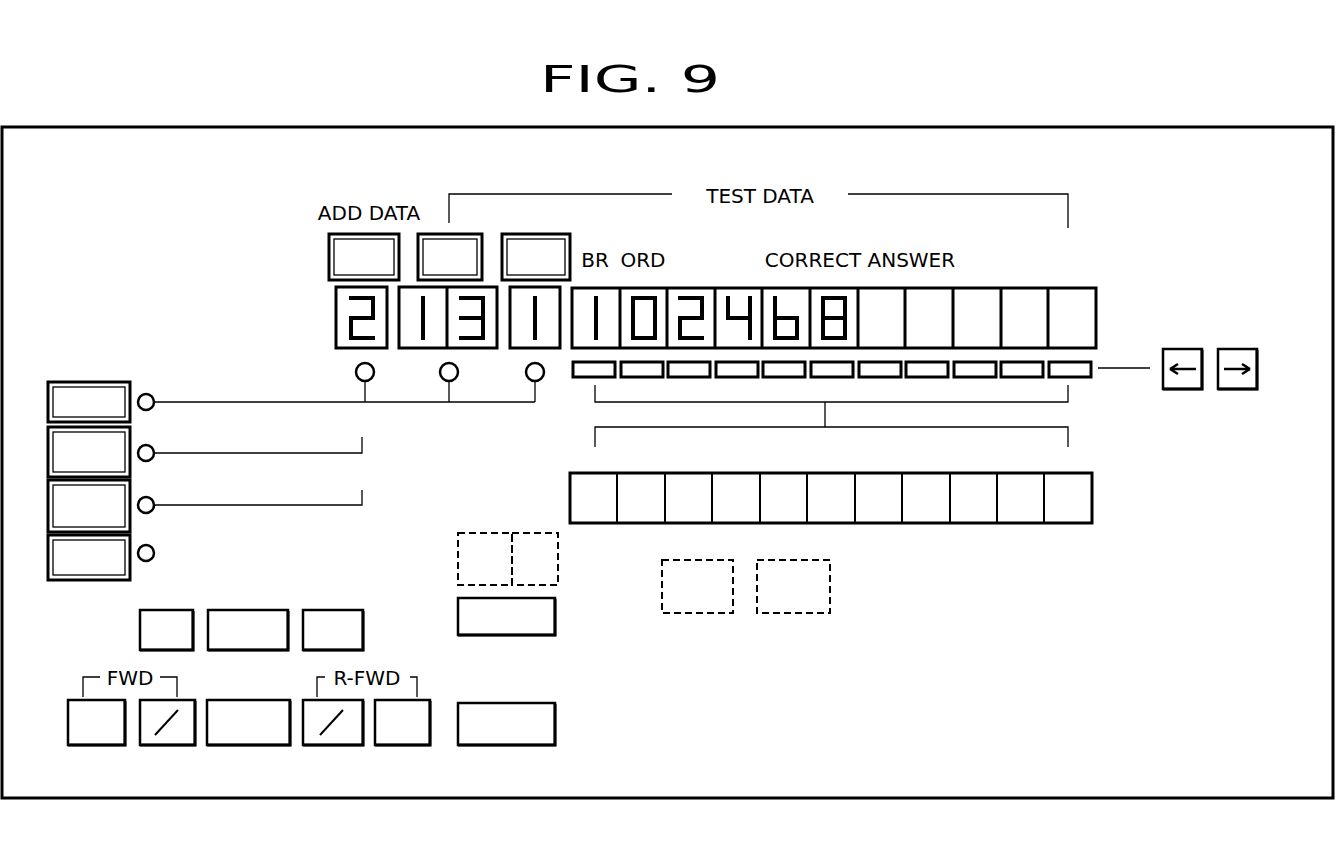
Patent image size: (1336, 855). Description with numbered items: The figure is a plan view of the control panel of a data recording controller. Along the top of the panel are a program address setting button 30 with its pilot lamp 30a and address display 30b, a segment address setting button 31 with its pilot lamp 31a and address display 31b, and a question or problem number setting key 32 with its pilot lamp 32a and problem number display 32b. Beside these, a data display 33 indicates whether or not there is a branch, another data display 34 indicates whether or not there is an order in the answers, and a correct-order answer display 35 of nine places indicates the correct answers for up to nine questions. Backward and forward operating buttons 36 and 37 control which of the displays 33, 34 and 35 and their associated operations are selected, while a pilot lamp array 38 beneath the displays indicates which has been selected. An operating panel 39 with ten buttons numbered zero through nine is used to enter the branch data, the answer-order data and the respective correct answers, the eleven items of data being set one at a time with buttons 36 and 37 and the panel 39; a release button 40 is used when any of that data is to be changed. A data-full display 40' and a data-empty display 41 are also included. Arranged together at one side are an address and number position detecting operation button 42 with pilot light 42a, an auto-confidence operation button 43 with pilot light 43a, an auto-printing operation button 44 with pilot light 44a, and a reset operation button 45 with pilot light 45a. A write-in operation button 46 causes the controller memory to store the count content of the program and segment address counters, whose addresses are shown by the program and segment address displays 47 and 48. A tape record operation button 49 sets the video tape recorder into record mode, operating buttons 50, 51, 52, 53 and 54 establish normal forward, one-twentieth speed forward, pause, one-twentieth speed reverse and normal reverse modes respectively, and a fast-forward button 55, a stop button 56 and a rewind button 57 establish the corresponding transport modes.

The program address setting button 30 is at (329, 257).
The pilot lamp 30a is at (352, 372).
The address display 30b is at (336, 322).
The segment address setting button 31 is at (433, 234).
The pilot lamp 31a is at (438, 372).
The address display 31b is at (487, 287).
The question number setting key 32 is at (545, 234).
The pilot lamp 32a is at (524, 372).
The problem number display 32b is at (552, 350).
The data display 33 is at (611, 287).
The data display 34 is at (662, 287).
The correct-order answer display 35 is at (1055, 264).
The backward operating button 36 is at (1183, 349).
The forward operating button 37 is at (1242, 349).
The pilot lamp array 38 is at (1082, 388).
The operating panel 39 is at (972, 533).
The release button 40 is at (1080, 539).
The data-full display 40' is at (697, 626).
The data-empty display 41 is at (792, 614).
The address and number position detecting operation button 42 is at (40, 396).
The pilot light 42a is at (153, 396).
The auto-confidence operation button 43 is at (46, 449).
The pilot light 43a is at (154, 450).
The auto-printing operation button 44 is at (40, 512).
The pilot light 44a is at (154, 502).
The reset operation button 45 is at (46, 564).
The pilot light 45a is at (154, 550).
The write-in operation button 46 is at (557, 712).
The program address display 47 is at (458, 547).
The segment address display 48 is at (559, 550).
The tape record operation button 49 is at (557, 608).
The operating button 50 is at (96, 746).
The operating button 51 is at (182, 746).
The operating button 52 is at (263, 746).
The operating button 53 is at (348, 746).
The operating button 54 is at (418, 746).
The fast-forward button 55 is at (170, 610).
The stop button 56 is at (252, 610).
The rewind button 57 is at (338, 610).